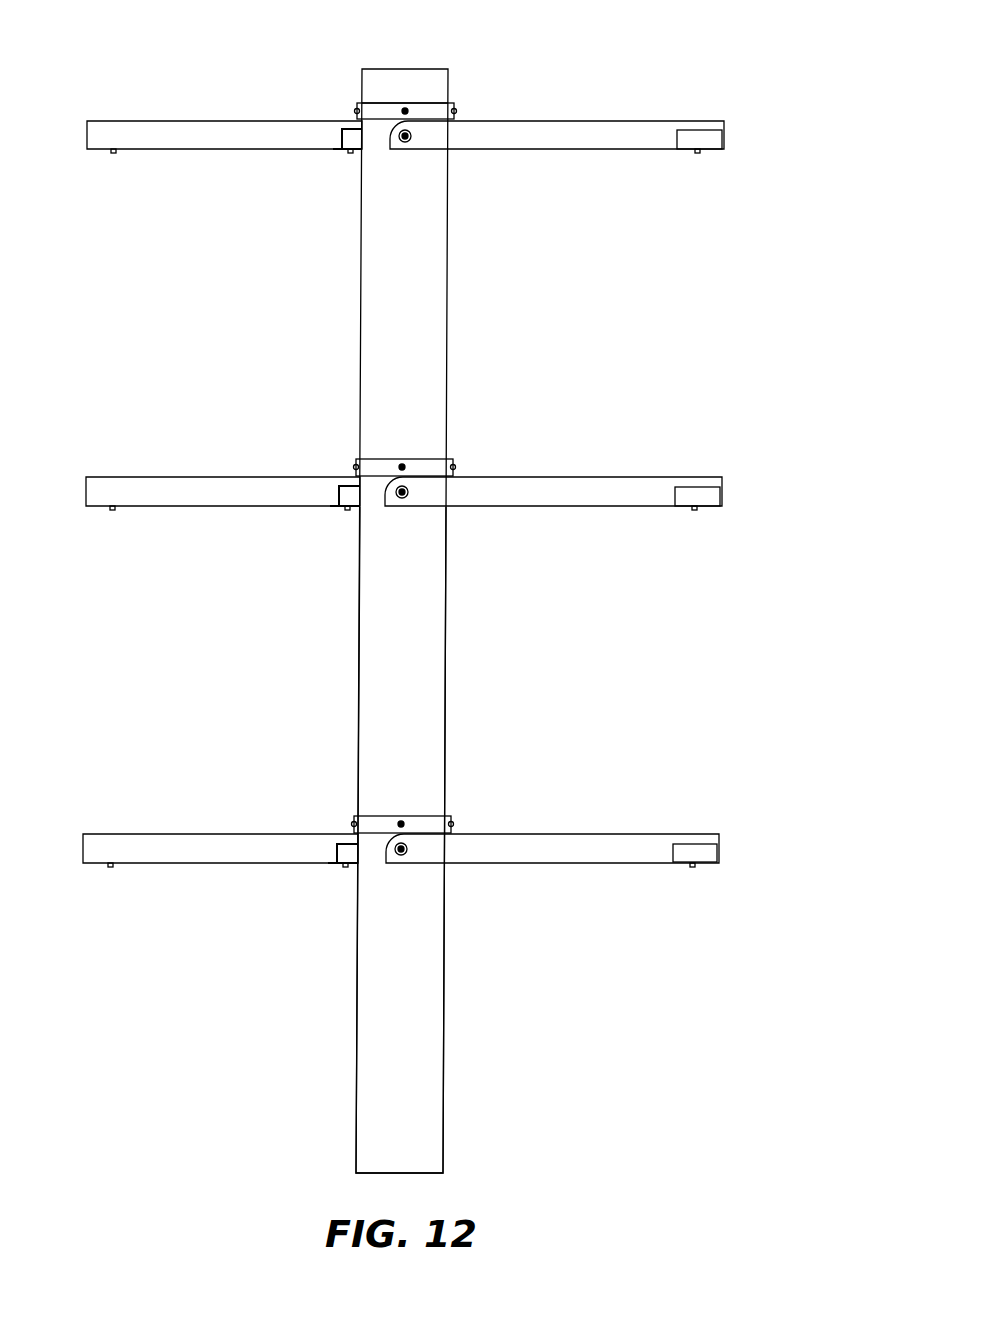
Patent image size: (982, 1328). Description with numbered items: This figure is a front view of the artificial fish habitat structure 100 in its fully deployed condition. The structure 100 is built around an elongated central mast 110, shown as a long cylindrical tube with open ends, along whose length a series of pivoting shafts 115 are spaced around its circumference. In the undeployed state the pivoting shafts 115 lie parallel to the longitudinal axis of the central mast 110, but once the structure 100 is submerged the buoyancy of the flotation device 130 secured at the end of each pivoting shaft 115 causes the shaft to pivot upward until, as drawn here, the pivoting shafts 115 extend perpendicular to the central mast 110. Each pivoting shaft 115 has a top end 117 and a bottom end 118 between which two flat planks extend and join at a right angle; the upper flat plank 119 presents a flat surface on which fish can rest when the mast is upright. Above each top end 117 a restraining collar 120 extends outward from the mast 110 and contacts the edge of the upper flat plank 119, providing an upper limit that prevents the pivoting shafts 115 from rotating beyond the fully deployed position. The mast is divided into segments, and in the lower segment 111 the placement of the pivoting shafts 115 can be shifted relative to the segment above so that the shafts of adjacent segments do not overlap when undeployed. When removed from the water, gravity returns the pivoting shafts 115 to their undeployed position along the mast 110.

The structure 100 is at (522, 78).
The central mast 110 is at (432, 292).
The lower segment 111 is at (424, 659).
The pivoting shaft 115 is at (587, 493).
The top end 117 is at (387, 505).
The bottom end 118 is at (722, 490).
The upper flat plank 119 is at (545, 491).
The restraining collar 120 is at (428, 823).
The flotation device 130 is at (700, 137).